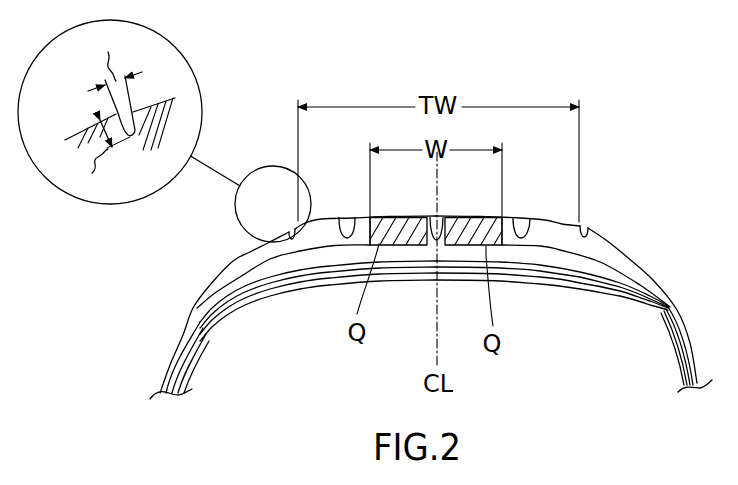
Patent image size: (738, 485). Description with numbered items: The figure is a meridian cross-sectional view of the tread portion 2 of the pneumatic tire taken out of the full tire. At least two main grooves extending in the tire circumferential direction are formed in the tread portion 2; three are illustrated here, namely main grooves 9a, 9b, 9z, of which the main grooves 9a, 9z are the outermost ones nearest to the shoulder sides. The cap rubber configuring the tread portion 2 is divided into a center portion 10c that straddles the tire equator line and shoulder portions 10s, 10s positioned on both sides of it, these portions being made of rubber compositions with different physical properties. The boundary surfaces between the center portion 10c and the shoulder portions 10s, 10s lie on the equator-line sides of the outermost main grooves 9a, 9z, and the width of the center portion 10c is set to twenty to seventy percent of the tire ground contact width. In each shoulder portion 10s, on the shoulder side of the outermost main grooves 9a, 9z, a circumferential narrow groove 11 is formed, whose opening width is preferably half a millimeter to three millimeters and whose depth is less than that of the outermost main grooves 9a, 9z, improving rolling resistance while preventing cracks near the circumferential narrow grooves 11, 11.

The tread portion 2 is at (640, 241).
The main groove 9a is at (346, 219).
The main groove 9b is at (431, 232).
The main groove 9z is at (517, 221).
The center portion 10c is at (408, 246).
The shoulder portion 10s is at (306, 264).
The circumferential narrow groove 11 is at (121, 114).